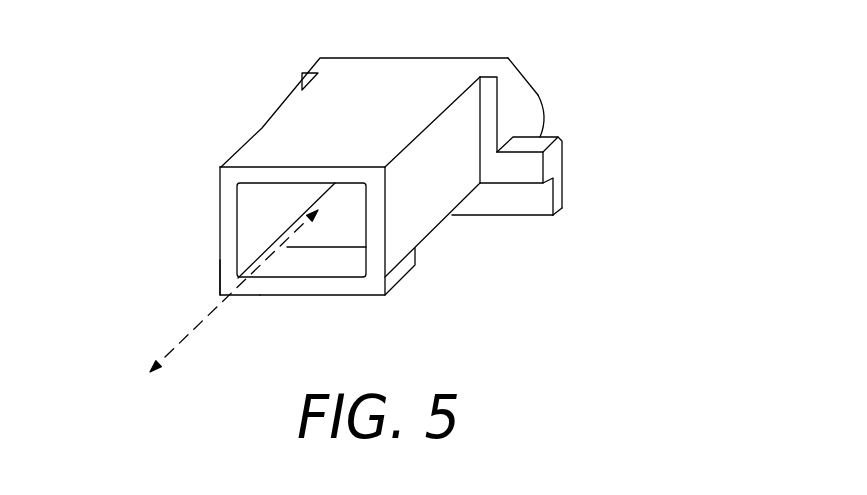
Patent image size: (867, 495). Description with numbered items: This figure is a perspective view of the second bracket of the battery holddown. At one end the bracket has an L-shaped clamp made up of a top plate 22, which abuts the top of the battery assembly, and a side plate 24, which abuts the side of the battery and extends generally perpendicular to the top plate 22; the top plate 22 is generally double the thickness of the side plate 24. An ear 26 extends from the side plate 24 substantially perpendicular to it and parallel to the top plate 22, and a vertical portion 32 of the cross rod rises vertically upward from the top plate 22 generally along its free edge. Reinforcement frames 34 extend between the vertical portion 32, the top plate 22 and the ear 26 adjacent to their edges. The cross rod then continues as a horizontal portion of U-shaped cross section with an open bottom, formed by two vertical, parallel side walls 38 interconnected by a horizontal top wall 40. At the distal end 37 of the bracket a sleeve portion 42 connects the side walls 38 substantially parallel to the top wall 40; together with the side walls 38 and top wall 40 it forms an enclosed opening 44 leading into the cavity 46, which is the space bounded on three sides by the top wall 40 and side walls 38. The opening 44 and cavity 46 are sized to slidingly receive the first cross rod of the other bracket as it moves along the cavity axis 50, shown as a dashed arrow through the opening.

The top plate 22 is at (527, 170).
The side plate 24 is at (560, 193).
The ear 26 is at (540, 110).
The vertical portion 32 is at (487, 97).
The reinforcement frame 34 is at (513, 75).
The distal end 37 is at (227, 260).
The side wall 38 is at (227, 238).
The top wall 40 is at (288, 172).
The sleeve portion 42 is at (312, 293).
The enclosed opening 44 is at (348, 212).
The cavity 46 is at (268, 210).
The cavity axis 50 is at (188, 337).